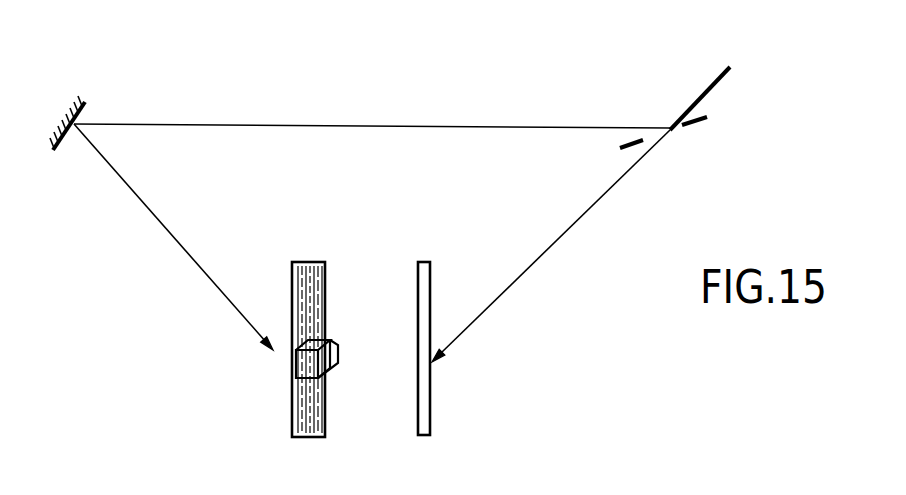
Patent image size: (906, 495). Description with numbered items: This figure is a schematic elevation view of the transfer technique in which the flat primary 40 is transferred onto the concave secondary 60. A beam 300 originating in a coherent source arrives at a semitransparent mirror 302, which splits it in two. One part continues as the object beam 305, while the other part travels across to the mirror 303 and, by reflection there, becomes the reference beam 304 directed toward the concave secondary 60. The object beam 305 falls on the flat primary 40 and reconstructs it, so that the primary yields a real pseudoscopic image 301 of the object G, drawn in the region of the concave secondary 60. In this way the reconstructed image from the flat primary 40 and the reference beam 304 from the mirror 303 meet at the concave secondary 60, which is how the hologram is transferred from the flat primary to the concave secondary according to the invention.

The beam 300 is at (715, 78).
The real pseudoscopic image 301 is at (327, 340).
The semitransparent mirror 302 is at (695, 122).
The mirror 303 is at (65, 143).
The reference beam 304 is at (163, 227).
The object beam 305 is at (553, 243).
The concave secondary 60 is at (302, 437).
The flat primary 40 is at (430, 410).